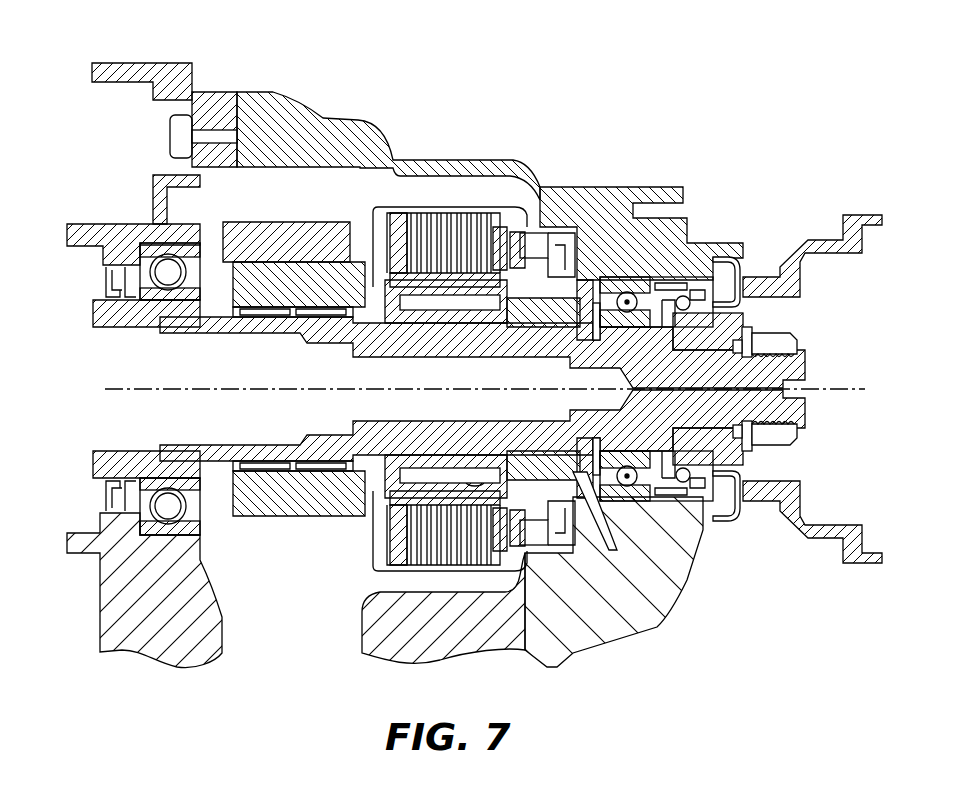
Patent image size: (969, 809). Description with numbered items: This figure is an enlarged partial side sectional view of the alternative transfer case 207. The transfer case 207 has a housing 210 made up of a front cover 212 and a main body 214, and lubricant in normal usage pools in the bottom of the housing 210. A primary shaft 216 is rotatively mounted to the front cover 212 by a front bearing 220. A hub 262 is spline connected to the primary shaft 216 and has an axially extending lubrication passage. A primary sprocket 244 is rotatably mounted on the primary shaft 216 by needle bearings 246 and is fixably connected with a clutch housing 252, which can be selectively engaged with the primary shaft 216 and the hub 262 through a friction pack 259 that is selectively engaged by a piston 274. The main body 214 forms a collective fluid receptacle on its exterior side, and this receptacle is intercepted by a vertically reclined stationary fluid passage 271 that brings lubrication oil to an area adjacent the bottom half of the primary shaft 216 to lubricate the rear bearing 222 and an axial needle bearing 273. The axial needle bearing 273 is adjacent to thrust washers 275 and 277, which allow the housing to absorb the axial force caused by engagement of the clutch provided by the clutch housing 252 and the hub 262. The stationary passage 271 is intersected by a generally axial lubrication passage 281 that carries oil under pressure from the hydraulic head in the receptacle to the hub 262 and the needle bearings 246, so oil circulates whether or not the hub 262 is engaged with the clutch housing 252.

The transfer case 207 is at (484, 100).
The housing 210 is at (233, 95).
The front cover 212 is at (105, 63).
The main body 214 is at (290, 108).
The primary shaft 216 is at (805, 372).
The front bearing 220 is at (150, 300).
The rear bearing 222 is at (642, 292).
The primary sprocket 244 is at (250, 288).
The needle bearings 246 is at (260, 467).
The clutch housing 252 is at (400, 217).
The friction pack 259 is at (477, 228).
The hub 262 is at (457, 313).
The stationary fluid passage 271 is at (600, 520).
The axial needle bearing 273 is at (596, 305).
The piston 274 is at (533, 233).
The thrust washer 275 is at (573, 320).
The thrust washer 277 is at (600, 337).
The axial lubrication passage 281 is at (540, 473).